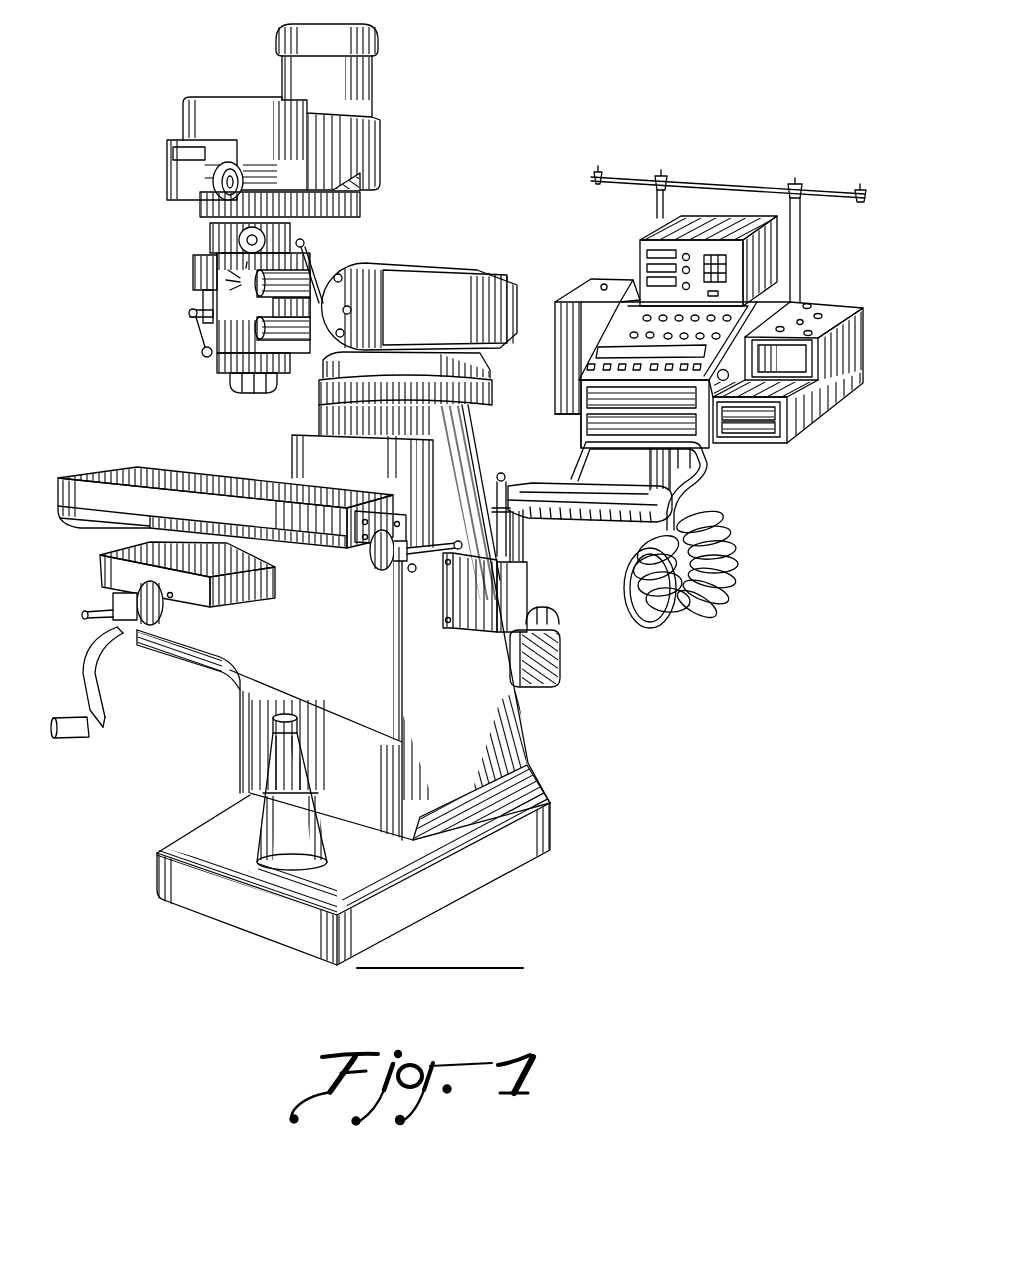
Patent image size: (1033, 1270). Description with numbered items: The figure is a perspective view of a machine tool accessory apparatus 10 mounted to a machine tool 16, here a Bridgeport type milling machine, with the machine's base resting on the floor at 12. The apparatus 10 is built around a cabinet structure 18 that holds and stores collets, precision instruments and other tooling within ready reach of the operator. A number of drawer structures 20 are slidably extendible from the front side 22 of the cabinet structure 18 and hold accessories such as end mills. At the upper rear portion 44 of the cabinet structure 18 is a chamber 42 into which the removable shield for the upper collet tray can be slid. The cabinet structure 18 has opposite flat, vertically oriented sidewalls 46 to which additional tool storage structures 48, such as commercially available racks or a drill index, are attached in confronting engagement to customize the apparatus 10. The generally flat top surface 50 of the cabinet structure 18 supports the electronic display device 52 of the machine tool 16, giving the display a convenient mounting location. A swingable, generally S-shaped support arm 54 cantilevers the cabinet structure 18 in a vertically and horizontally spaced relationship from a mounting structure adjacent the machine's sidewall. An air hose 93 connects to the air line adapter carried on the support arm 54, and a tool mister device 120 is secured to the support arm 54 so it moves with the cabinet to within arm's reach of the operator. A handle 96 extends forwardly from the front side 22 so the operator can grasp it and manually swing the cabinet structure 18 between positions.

The machine tool accessory apparatus 10 is at (650, 146).
The base 12 is at (482, 968).
The machine tool 16 is at (446, 292).
The cabinet structure 18 is at (773, 308).
The drawer structures 20 is at (621, 418).
The front side 22 is at (623, 394).
The chamber 42 is at (620, 300).
The upper rear portion 44 is at (774, 294).
The sidewalls 46 is at (624, 298).
The additional tool storage structures 48 is at (568, 325).
The top surface 50 is at (777, 284).
The electronic display device 52 is at (707, 228).
The support arm 54 is at (541, 487).
The air hose 93 is at (664, 627).
The handle 96 is at (703, 489).
The tool mister device 120 is at (558, 530).